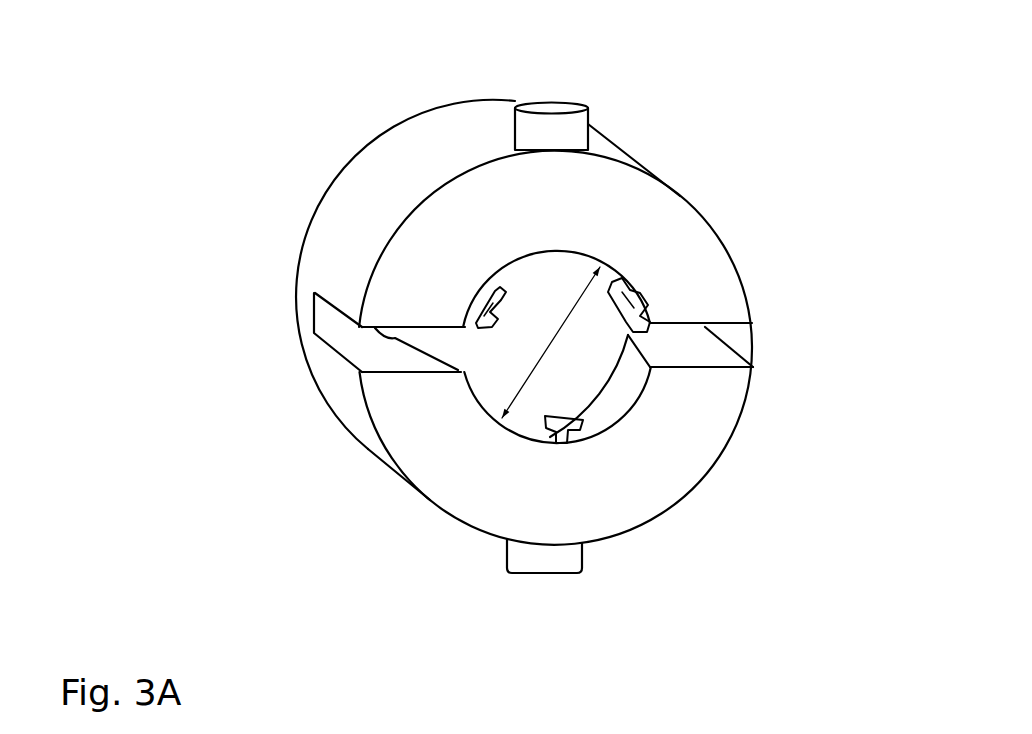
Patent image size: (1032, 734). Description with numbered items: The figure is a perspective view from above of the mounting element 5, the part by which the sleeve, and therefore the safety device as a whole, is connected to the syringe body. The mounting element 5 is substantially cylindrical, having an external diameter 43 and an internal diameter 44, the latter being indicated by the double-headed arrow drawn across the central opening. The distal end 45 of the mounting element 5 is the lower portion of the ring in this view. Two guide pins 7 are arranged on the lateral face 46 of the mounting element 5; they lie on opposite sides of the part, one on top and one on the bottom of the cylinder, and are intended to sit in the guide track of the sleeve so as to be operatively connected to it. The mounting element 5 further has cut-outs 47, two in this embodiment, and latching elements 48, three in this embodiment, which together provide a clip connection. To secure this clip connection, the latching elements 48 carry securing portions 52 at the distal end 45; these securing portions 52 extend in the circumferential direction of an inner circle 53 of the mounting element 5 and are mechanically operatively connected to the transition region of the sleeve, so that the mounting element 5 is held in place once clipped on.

The mounting element 5 is at (771, 81).
The guide pins 7 is at (550, 112).
The external diameter 43 is at (688, 190).
The internal diameter 44 is at (540, 358).
The distal end 45 is at (433, 477).
The lateral face 46 is at (360, 195).
The cut-outs 47 is at (776, 342).
The latching elements 48 is at (657, 323).
The securing portions 52 is at (467, 325).
The inner circle 53 is at (500, 285).